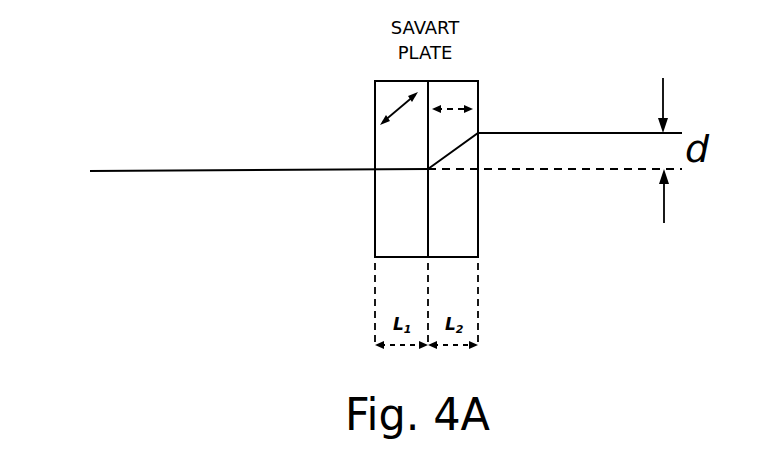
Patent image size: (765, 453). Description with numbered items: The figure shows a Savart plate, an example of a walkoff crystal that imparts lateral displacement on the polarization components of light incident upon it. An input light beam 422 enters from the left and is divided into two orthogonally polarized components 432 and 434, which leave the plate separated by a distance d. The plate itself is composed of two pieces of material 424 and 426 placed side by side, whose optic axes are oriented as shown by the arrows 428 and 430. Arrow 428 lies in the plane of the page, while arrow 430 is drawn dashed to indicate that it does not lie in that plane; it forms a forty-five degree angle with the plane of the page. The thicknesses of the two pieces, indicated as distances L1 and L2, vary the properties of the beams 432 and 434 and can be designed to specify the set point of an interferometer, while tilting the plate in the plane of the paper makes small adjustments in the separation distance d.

The input light beam 422 is at (112, 183).
The piece of material 424 is at (385, 218).
The piece of material 426 is at (455, 217).
The arrow 428 is at (390, 98).
The arrow 430 is at (453, 100).
The orthogonally polarized component 432 is at (582, 122).
The orthogonally polarized component 434 is at (583, 178).